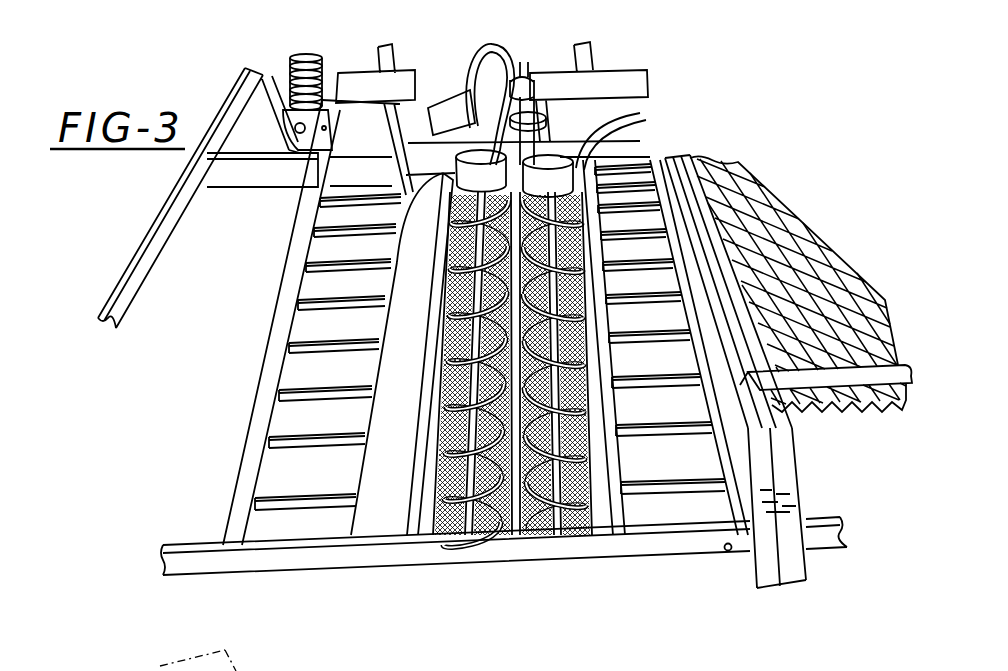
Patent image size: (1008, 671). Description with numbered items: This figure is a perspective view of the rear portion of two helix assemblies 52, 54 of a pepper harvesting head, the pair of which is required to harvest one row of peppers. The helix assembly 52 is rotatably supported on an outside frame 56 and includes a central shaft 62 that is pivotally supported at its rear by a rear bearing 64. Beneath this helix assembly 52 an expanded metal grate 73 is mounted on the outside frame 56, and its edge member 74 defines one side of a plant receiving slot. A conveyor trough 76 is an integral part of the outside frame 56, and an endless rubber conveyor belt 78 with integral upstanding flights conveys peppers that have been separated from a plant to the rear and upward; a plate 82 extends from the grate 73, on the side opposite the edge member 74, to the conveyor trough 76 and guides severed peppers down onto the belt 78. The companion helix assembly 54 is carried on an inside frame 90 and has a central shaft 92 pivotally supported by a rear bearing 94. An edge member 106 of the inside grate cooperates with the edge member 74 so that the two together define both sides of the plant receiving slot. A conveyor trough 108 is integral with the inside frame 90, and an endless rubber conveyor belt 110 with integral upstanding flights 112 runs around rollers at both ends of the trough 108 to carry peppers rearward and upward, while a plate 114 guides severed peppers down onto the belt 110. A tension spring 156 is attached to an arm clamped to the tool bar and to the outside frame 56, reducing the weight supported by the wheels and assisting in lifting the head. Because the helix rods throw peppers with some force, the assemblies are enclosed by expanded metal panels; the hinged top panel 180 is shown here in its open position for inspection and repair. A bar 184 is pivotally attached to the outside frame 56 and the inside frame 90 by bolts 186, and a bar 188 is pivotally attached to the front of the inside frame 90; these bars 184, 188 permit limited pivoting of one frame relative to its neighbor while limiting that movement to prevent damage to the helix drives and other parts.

The helix assembly 52 is at (417, 527).
The helix assembly 54 is at (558, 520).
The outside frame 56 is at (150, 287).
The central shaft 62 is at (457, 548).
The rear bearing 64 is at (453, 107).
The expanded metal grate 73 is at (457, 258).
The edge member 74 is at (473, 527).
The conveyor trough 76 is at (267, 407).
The endless rubber conveyor belt 78 is at (273, 477).
The plate 82 is at (367, 523).
The inside frame 90 is at (770, 598).
The central shaft 92 is at (520, 527).
The rear bearing 94 is at (625, 120).
The edge member 106 is at (495, 520).
The conveyor trough 108 is at (720, 507).
The endless rubber conveyor belt 110 is at (640, 167).
The upstanding flights 112 is at (653, 490).
The plate 114 is at (597, 520).
The tension spring 156 is at (290, 77).
The top panel 180 is at (883, 412).
The bar 184 is at (210, 563).
The bolts 186 is at (730, 552).
The bar 188 is at (817, 520).